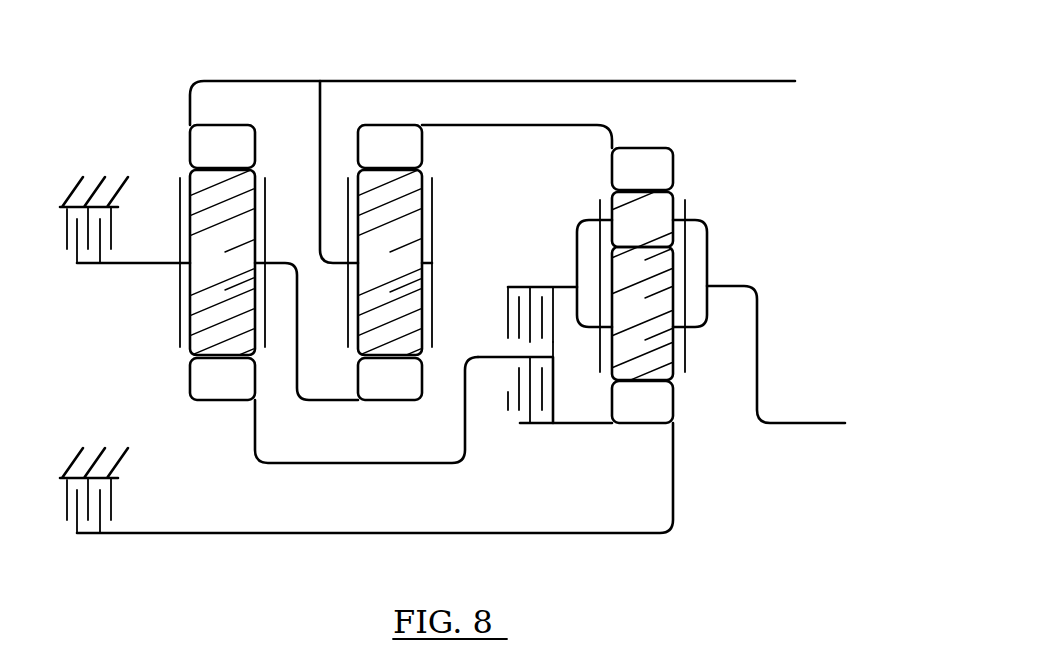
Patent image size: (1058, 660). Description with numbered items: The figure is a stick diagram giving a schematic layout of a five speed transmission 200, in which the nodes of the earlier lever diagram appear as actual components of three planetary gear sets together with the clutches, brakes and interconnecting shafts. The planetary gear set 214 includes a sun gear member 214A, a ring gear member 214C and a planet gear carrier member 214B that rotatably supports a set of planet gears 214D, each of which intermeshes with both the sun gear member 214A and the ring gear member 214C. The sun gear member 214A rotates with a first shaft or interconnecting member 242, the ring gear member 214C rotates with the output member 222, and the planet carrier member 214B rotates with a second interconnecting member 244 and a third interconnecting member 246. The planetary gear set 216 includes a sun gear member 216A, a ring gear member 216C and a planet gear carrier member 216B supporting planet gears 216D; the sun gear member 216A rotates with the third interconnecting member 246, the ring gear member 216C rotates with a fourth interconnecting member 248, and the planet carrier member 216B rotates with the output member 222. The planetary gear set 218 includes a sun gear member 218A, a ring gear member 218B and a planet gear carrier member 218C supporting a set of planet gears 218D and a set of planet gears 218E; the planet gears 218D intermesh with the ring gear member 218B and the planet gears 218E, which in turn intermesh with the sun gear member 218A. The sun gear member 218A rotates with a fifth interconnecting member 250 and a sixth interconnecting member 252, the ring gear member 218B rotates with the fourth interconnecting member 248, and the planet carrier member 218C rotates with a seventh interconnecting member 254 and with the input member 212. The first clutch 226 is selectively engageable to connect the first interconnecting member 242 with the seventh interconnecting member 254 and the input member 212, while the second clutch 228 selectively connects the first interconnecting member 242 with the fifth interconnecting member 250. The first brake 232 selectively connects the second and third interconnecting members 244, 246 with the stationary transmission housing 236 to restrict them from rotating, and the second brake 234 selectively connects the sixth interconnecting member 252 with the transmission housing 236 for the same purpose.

The five speed transmission 200 is at (792, 168).
The input member 212 is at (803, 425).
The planetary gear set 214 is at (163, 276).
The sun gear member 214A is at (212, 380).
The planet gear carrier member 214B is at (180, 323).
The ring gear member 214C is at (230, 138).
The planet gears 214D is at (222, 272).
The planetary gear set 216 is at (420, 276).
The sun gear member 216A is at (400, 385).
The planet gear carrier member 216B is at (433, 193).
The ring gear member 216C is at (382, 138).
The planet gears 216D is at (390, 272).
The planetary gear set 218 is at (676, 353).
The sun gear member 218A is at (650, 410).
The ring gear member 218B is at (660, 168).
The planet gear carrier member 218C is at (688, 222).
The planet gears 218D is at (642, 219).
The planet gears 218E is at (642, 286).
The output member 222 is at (712, 81).
The first clutch 226 is at (508, 318).
The second clutch 228 is at (508, 392).
The first brake 232 is at (112, 235).
The second brake 234 is at (112, 498).
The transmission housing 236 is at (77, 183).
The first shaft or interconnecting member 242 is at (297, 464).
The second shaft or interconnecting member 244 is at (147, 266).
The third shaft or interconnecting member 246 is at (300, 362).
The fourth shaft or interconnecting member 248 is at (498, 125).
The fifth shaft or interconnecting member 250 is at (573, 426).
The sixth shaft or interconnecting member 252 is at (470, 534).
The seventh shaft or interconnecting member 254 is at (536, 287).